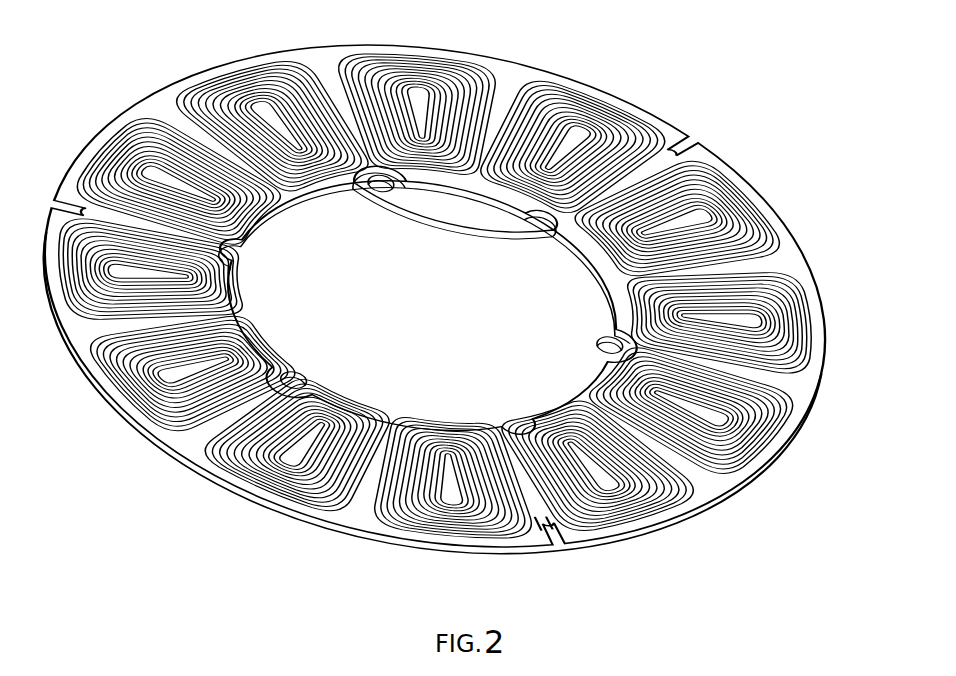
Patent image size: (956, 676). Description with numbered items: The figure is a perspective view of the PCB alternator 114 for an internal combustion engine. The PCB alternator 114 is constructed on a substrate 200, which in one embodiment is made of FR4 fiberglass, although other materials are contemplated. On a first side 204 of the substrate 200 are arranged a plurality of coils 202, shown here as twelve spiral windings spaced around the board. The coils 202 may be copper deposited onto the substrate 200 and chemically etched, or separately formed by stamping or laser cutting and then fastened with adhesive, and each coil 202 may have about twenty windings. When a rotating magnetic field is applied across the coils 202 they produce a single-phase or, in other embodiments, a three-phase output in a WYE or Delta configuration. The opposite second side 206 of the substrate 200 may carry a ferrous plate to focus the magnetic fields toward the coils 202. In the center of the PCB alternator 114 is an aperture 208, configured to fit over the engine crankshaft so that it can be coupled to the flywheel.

The PCB alternator 114 is at (213, 49).
The substrate 200 is at (697, 488).
The coils 202 is at (742, 198).
The first side 204 is at (800, 263).
The second side 206 is at (292, 520).
The aperture 208 is at (443, 312).